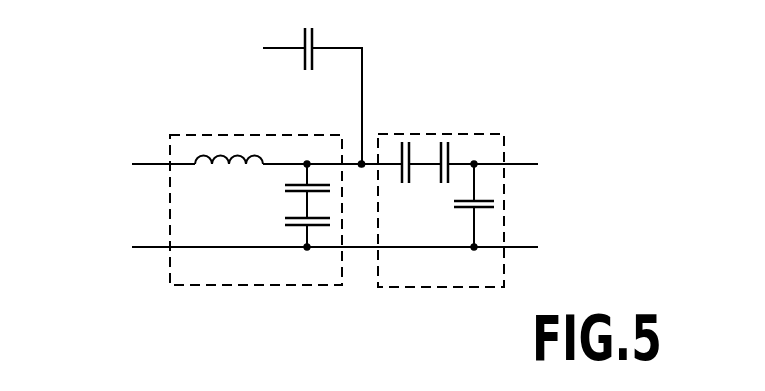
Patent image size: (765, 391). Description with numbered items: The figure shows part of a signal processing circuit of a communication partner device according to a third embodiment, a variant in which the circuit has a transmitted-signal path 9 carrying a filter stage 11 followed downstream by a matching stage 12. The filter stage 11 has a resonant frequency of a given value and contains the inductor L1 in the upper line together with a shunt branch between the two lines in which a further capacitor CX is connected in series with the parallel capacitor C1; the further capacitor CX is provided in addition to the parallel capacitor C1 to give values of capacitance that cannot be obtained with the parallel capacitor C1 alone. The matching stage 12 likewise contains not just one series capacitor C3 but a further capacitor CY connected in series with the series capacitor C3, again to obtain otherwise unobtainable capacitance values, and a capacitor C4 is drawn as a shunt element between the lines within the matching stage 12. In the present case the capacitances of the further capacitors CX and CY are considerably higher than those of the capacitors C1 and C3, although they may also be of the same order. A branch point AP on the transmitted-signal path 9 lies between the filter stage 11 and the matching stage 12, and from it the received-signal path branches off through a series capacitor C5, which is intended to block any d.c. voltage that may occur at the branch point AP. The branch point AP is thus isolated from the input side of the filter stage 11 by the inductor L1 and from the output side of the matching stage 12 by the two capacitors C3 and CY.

The transmitted-signal path 9 is at (146, 208).
The filter stage 11 is at (255, 290).
The matching stage 12 is at (463, 292).
The inductor L1 is at (228, 153).
The further capacitor CX is at (297, 187).
The parallel capacitor C1 is at (291, 228).
The series capacitor C5 is at (318, 46).
The branch point AP is at (362, 162).
The further capacitor CY is at (406, 156).
The series capacitor C3 is at (444, 156).
The capacitor C4 is at (459, 207).